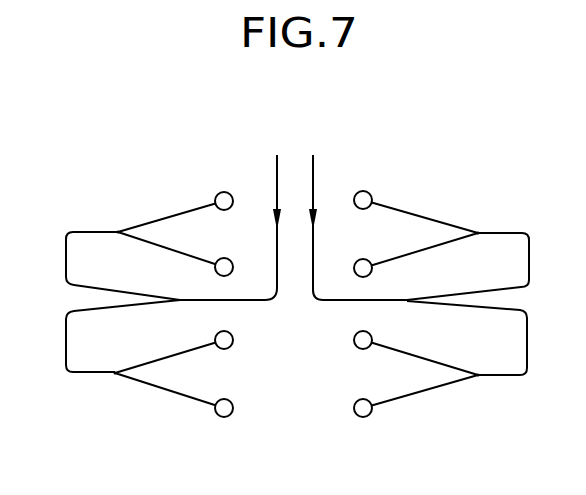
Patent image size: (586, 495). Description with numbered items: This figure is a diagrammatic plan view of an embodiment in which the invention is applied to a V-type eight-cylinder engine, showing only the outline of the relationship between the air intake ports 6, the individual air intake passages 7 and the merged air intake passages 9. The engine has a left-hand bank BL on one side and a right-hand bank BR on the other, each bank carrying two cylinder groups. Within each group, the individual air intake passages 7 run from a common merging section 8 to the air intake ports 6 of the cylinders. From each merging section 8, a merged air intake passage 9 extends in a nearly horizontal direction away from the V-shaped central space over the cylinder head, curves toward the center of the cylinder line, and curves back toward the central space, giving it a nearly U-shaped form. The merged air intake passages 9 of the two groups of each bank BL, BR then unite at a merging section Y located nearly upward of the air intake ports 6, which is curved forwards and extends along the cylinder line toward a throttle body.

The air intake port 6 is at (231, 195).
The individual air intake passage 7 is at (170, 216).
The merging section 8 is at (118, 232).
The merged air intake passage 9 is at (65, 262).
The merging section Y is at (192, 300).
The left-hand bank BL is at (160, 143).
The right-hand bank BR is at (473, 147).